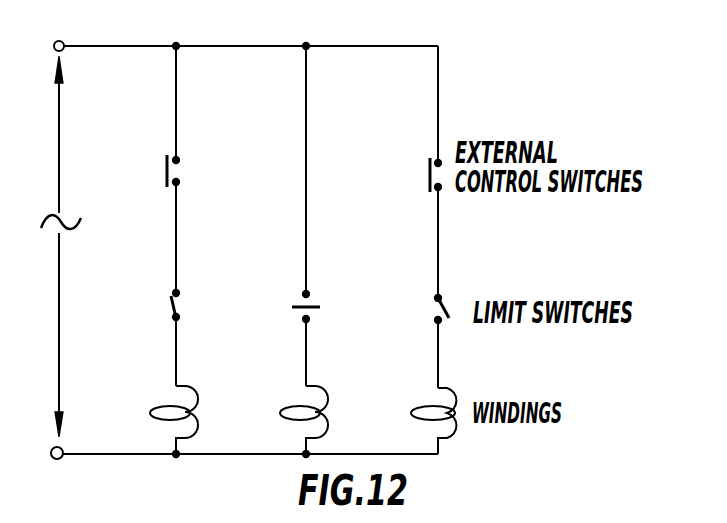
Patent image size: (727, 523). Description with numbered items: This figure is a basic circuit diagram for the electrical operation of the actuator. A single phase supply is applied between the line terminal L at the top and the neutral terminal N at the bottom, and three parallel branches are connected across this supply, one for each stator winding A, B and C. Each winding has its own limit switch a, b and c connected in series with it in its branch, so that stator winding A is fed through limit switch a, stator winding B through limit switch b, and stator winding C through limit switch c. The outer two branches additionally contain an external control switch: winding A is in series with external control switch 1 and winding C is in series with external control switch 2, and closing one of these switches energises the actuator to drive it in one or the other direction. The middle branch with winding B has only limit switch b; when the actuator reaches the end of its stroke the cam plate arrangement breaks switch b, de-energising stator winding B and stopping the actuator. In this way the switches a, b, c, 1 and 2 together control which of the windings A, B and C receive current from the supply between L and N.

The line terminal L is at (58, 32).
The neutral terminal N is at (53, 469).
The external control switch 1 is at (165, 171).
The external control switch 2 is at (426, 175).
The limit switch a is at (165, 305).
The limit switch b is at (298, 307).
The limit switch c is at (450, 311).
The stator winding A is at (165, 420).
The stator winding B is at (295, 420).
The stator winding C is at (425, 421).